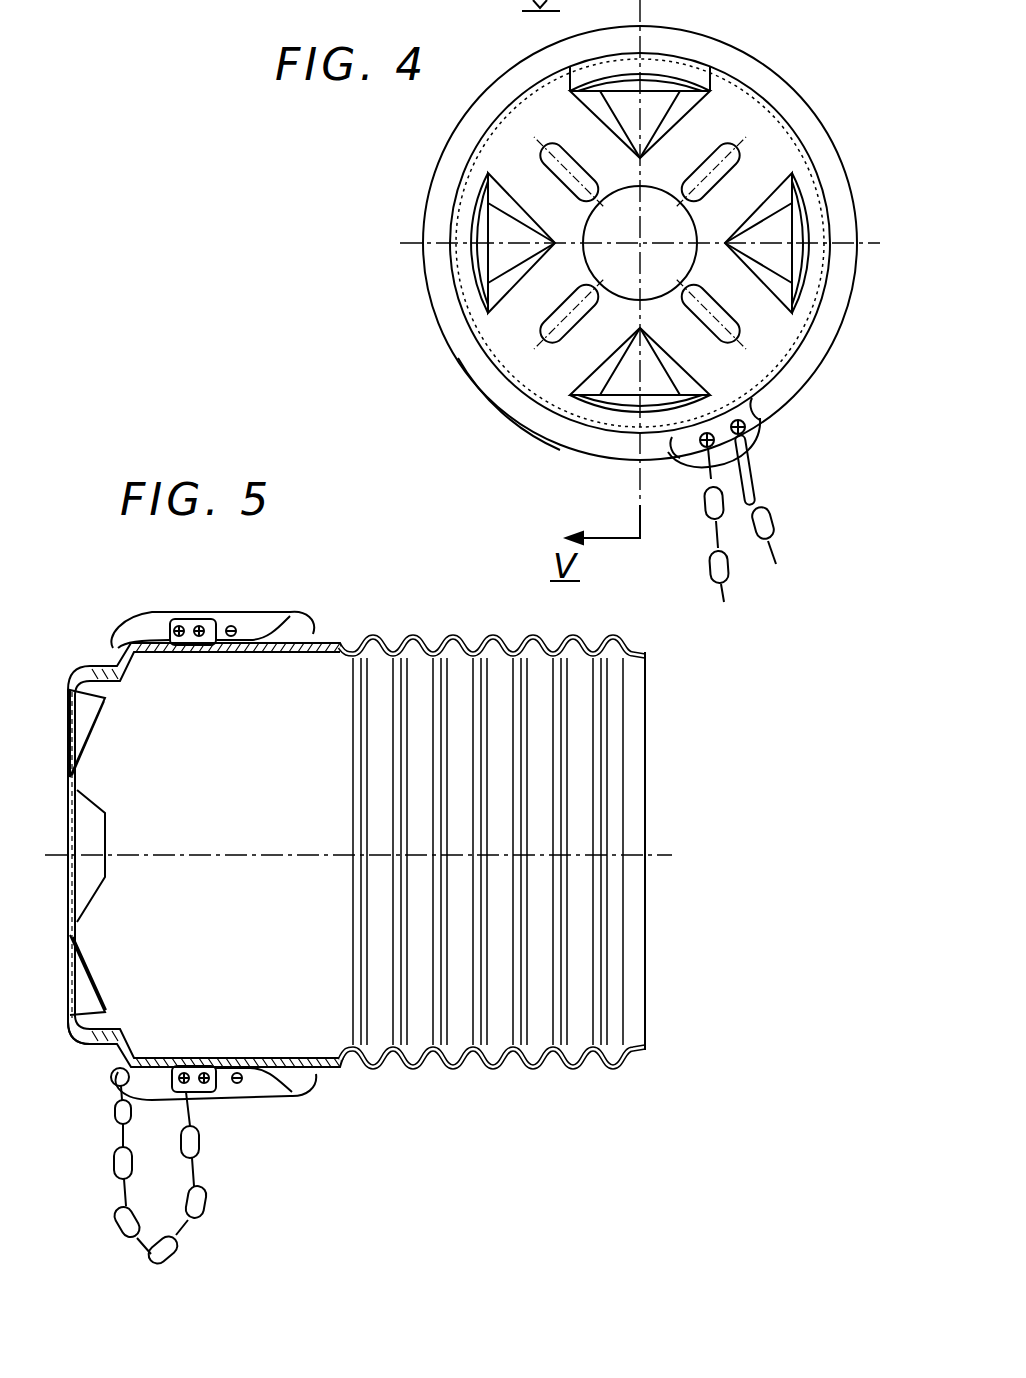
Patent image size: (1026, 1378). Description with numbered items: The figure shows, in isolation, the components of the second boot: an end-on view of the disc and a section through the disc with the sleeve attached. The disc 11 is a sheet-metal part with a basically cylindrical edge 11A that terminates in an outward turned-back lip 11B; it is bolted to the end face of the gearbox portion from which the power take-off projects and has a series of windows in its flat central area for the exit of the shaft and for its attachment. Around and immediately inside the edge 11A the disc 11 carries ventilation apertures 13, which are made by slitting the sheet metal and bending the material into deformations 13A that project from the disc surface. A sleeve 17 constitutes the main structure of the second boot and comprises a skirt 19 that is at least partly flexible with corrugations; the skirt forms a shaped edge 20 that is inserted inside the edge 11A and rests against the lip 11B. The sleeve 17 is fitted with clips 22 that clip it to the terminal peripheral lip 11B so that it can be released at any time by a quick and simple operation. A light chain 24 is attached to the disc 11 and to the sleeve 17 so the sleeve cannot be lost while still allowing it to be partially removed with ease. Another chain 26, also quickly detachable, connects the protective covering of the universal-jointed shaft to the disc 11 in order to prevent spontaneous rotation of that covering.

In FIG. 4, the disc 11 is at (527, 360).
In FIG. 5, the disc 11 is at (73, 776).
In FIG. 4, the cylindrical edge 11A is at (562, 412).
In FIG. 5, the cylindrical edge 11A is at (92, 1046).
In FIG. 4, the outward turned-back lip 11B is at (457, 358).
In FIG. 4, the ventilation apertures 13 is at (672, 97).
In FIG. 4, the deformations 13A is at (612, 98).
In FIG. 5, the deformations 13A is at (100, 995).
In FIG. 5, the sleeve 17 is at (333, 628).
In FIG. 5, the skirt 19 is at (480, 635).
In FIG. 5, the shaped edge 20 is at (128, 682).
In FIG. 5, the clips 22 is at (212, 612).
In FIG. 4, the light chain 24 is at (705, 578).
In FIG. 5, the light chain 24 is at (125, 1240).
In FIG. 4, the chain 26 is at (778, 519).